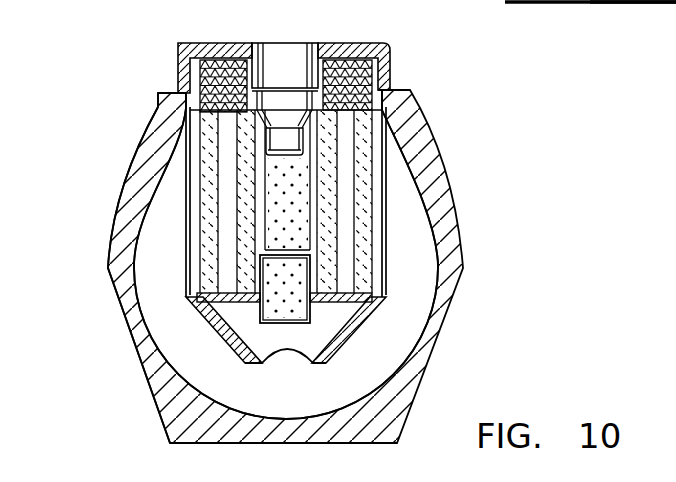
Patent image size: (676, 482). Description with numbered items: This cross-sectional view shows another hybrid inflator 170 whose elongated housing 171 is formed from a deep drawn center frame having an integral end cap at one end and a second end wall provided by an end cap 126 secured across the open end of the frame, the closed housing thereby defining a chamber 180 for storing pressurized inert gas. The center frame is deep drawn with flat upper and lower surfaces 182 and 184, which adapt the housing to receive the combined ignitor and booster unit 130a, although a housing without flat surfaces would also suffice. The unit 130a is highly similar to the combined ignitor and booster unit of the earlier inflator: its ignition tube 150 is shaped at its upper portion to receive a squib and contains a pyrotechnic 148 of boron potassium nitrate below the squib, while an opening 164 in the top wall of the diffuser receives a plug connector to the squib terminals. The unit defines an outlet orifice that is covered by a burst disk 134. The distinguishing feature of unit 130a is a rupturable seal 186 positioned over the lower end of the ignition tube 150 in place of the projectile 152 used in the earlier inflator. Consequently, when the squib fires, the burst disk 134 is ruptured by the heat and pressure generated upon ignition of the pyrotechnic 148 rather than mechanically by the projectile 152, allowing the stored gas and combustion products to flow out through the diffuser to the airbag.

The container body 126 is at (550, 3).
The projectile 152 is at (600, 3).
The opening 164 is at (270, 45).
The inflator 170 is at (88, 119).
The flat upper surface 182 is at (160, 122).
The pyrotechnic 148 is at (292, 182).
The combined ignitor and booster unit 130a is at (391, 214).
The elongated housing 171 is at (107, 290).
The ignition tube 150 is at (259, 322).
The chamber 180 is at (334, 390).
The rupturable seal 186 is at (310, 323).
The flat lower surface 184 is at (378, 443).
The burst disk 134 is at (280, 355).